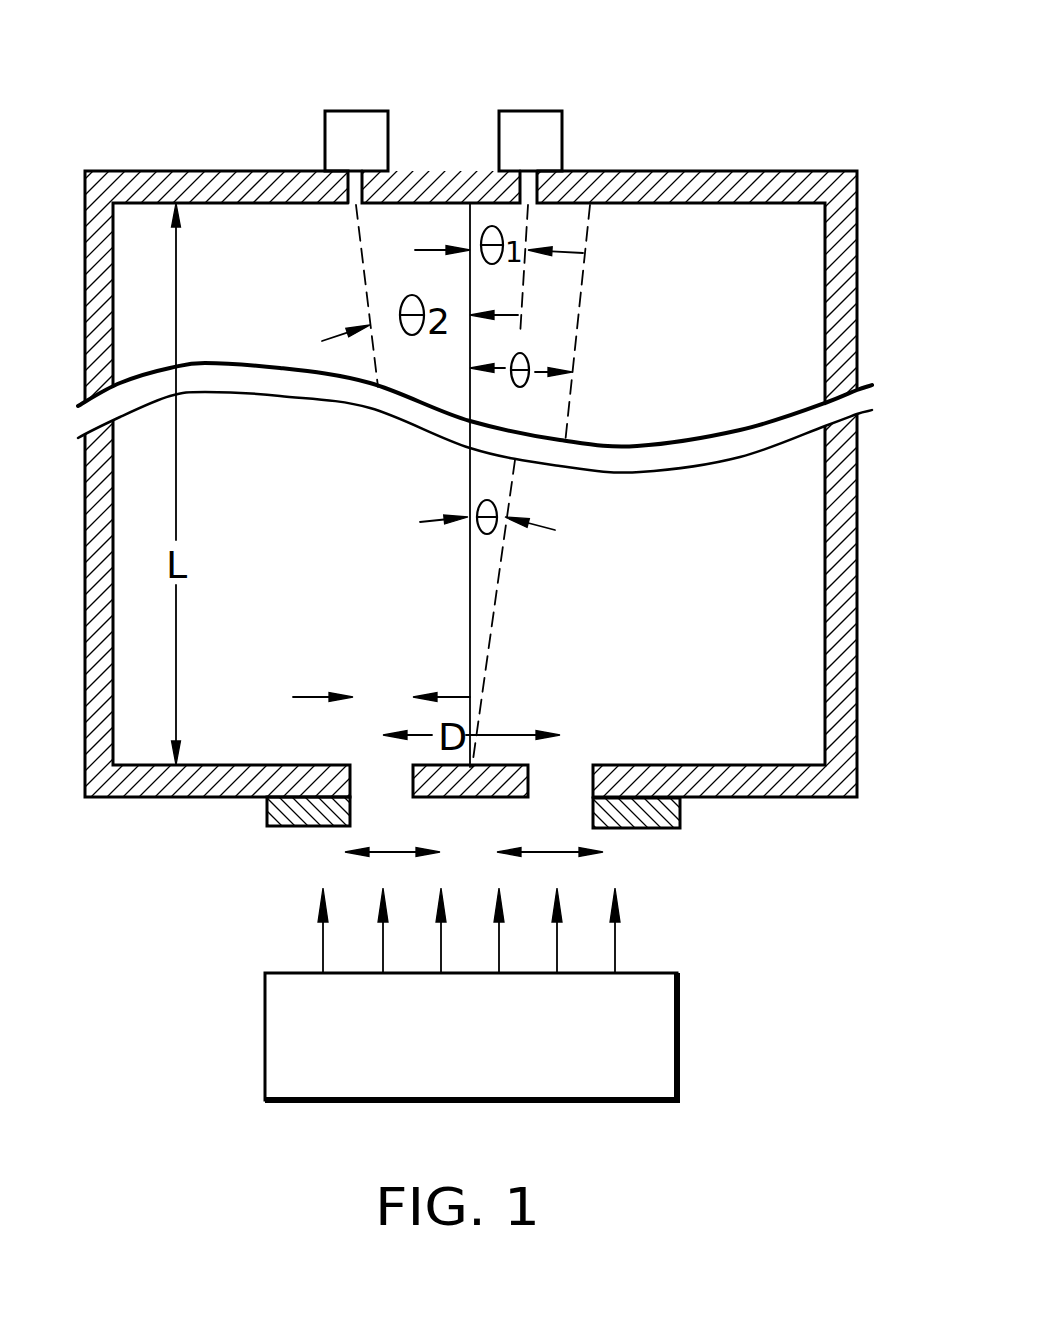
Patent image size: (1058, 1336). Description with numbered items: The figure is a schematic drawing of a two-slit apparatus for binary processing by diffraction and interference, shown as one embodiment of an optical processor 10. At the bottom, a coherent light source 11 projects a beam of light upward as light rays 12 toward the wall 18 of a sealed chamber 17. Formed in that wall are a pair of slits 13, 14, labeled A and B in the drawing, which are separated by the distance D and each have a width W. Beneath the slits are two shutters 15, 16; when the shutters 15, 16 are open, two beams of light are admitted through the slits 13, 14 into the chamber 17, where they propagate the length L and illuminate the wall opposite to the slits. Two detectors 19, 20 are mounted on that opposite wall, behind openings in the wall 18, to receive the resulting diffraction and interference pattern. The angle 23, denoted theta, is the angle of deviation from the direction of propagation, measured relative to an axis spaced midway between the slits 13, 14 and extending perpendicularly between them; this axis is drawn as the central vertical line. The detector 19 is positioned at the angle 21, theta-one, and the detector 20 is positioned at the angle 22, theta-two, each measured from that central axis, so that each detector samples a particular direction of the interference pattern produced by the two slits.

The optical processor 10 is at (701, 57).
The coherent light source 11 is at (678, 1058).
The light rays 12 is at (276, 935).
The slit 13 is at (382, 802).
The slit 14 is at (556, 802).
The shutter 15 is at (258, 813).
The shutter 16 is at (688, 818).
The sealed chamber 17 is at (475, 485).
The wall 18 is at (847, 611).
The detector 19 is at (562, 134).
The detector 20 is at (388, 134).
The angle theta-one 21 is at (522, 326).
The angle theta-two 22 is at (363, 270).
The angle theta 23 is at (497, 585).